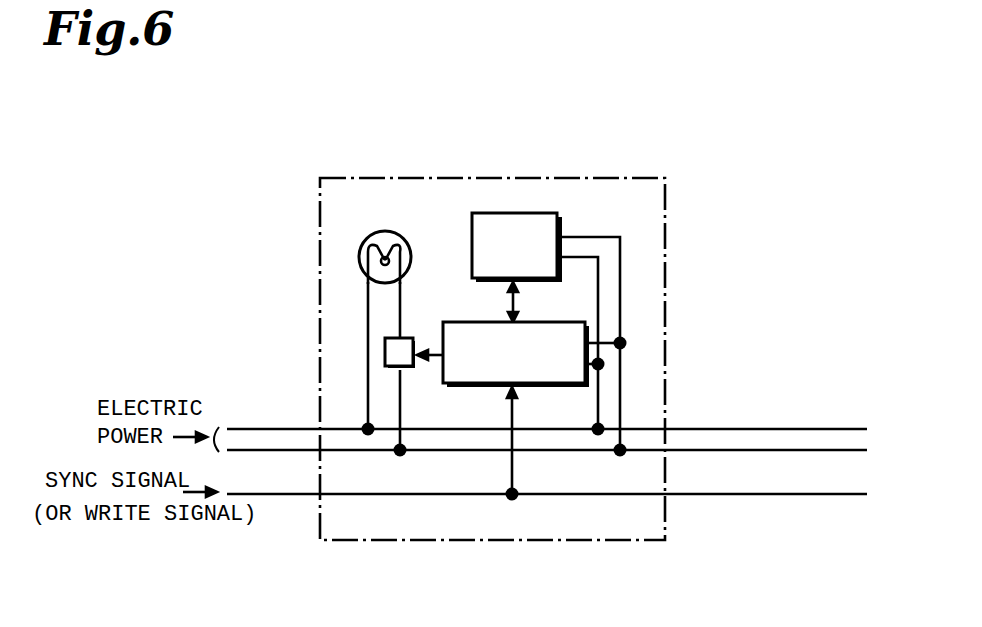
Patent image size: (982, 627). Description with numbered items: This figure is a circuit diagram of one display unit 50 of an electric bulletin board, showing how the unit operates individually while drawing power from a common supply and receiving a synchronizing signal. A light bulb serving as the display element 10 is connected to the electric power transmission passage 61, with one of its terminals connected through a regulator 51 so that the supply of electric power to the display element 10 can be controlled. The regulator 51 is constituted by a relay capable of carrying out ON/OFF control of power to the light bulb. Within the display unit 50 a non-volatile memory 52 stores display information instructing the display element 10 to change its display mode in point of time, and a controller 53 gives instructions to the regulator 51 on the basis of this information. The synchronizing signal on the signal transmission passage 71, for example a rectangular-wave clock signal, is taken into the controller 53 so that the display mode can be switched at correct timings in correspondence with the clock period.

The display element 10 is at (360, 256).
The display unit 50 is at (392, 173).
The regulator 51 is at (413, 338).
The non-volatile memory 52 is at (540, 213).
The controller 53 is at (533, 390).
The electric power transmission passage 61 is at (738, 452).
The signal transmission passage 71 is at (705, 498).